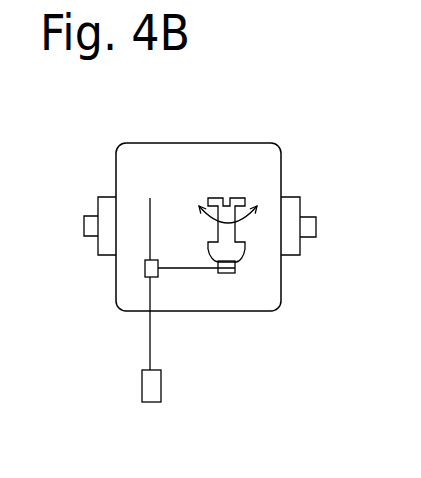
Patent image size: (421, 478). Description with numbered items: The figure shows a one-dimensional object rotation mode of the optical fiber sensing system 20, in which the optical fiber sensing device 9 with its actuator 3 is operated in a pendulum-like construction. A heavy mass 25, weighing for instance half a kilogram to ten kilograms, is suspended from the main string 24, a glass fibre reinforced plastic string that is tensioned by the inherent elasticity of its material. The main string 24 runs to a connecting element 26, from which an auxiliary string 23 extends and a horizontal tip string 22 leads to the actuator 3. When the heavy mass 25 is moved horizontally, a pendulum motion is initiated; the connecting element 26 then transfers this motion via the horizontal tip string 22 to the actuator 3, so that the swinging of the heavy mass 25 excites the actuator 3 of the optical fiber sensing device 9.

The optical fiber sensing system 20 is at (135, 137).
The actuator 3 is at (228, 207).
The auxiliary string 23 is at (150, 221).
The connecting element 26 is at (145, 268).
The main string 24 is at (150, 333).
The heavy mass 25 is at (148, 388).
The tip string 22 is at (232, 274).
The optical fiber sensing device 9 is at (260, 265).